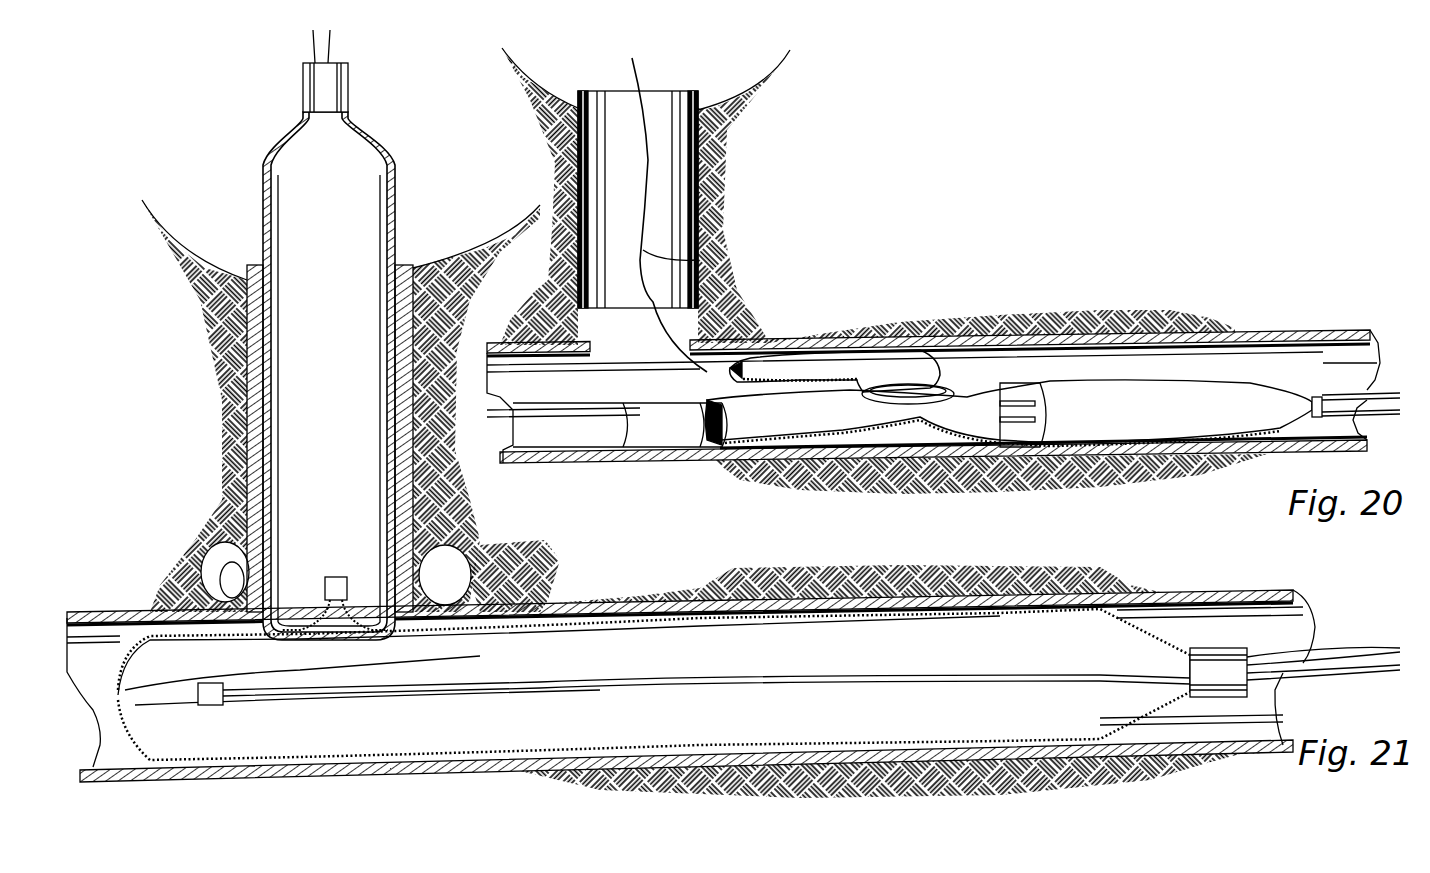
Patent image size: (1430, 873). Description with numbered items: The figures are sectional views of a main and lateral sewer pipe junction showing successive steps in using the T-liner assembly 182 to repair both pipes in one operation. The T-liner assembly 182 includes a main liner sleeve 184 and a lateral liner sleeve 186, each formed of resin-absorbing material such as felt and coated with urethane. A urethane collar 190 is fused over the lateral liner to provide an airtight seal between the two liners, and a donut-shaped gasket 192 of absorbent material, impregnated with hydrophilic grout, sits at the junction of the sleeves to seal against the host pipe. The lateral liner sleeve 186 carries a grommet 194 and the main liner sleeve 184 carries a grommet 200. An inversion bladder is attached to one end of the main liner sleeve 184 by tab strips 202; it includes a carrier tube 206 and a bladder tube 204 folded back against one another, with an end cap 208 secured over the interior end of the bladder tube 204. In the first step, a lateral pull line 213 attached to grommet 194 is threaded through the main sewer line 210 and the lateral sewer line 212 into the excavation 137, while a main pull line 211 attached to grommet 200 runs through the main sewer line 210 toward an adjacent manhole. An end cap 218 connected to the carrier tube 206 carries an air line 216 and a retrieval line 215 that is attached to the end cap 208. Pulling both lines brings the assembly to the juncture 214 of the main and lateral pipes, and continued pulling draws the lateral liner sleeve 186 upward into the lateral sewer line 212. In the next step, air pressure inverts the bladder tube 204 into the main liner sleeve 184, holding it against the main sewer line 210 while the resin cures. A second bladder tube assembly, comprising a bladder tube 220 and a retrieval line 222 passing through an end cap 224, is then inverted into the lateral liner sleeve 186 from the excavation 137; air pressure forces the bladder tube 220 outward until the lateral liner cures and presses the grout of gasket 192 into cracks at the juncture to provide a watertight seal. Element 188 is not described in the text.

In FIG. 20, the excavation 137 is at (762, 90).
In FIG. 21, the excavation 137 is at (505, 240).
In FIG. 20, the T-liner assembly 182 is at (820, 352).
In FIG. 21, the T-liner assembly 182 is at (530, 608).
In FIG. 20, the main liner sleeve 184 is at (790, 465).
In FIG. 21, the main liner sleeve 184 is at (152, 600).
In FIG. 20, the lateral liner sleeve 186 is at (830, 350).
In FIG. 21, the lateral liner sleeve 186 is at (223, 452).
In FIG. 21, the balloon 188 is at (228, 672).
In FIG. 20, the urethane collar 190 is at (958, 385).
In FIG. 21, the urethane collar 190 is at (213, 543).
In FIG. 20, the gasket 192 is at (953, 383).
In FIG. 21, the gasket 192 is at (183, 560).
In FIG. 20, the grommet 194 is at (760, 345).
In FIG. 20, the grommet 200 is at (745, 462).
In FIG. 20, the tab strips 202 is at (1017, 452).
In FIG. 21, the tab strips 202 is at (600, 648).
In FIG. 21, the bladder tube 204 is at (557, 606).
In FIG. 20, the carrier tube 206 is at (1102, 393).
In FIG. 21, the carrier tube 206 is at (723, 594).
In FIG. 21, the end cap 208 is at (220, 704).
In FIG. 20, the main sewer line 210 is at (935, 350).
In FIG. 21, the main sewer line 210 is at (662, 604).
In FIG. 20, the main pull line 211 is at (632, 462).
In FIG. 20, the lateral sewer line 212 is at (720, 228).
In FIG. 21, the lateral sewer line 212 is at (233, 462).
In FIG. 20, the lateral pull line 213 is at (700, 252).
In FIG. 20, the juncture 214 is at (740, 362).
In FIG. 21, the juncture 214 is at (375, 577).
In FIG. 20, the retrieval line 215 is at (1393, 393).
In FIG. 21, the retrieval line 215 is at (1347, 673).
In FIG. 20, the air line 216 is at (1345, 383).
In FIG. 21, the air line 216 is at (325, 50).
In FIG. 20, the end cap 218 is at (1314, 397).
In FIG. 21, the end cap 218 is at (1227, 648).
In FIG. 21, the bladder tube 220 is at (393, 190).
In FIG. 21, the retrieval line 222 is at (333, 163).
In FIG. 21, the end cap 224 is at (350, 72).